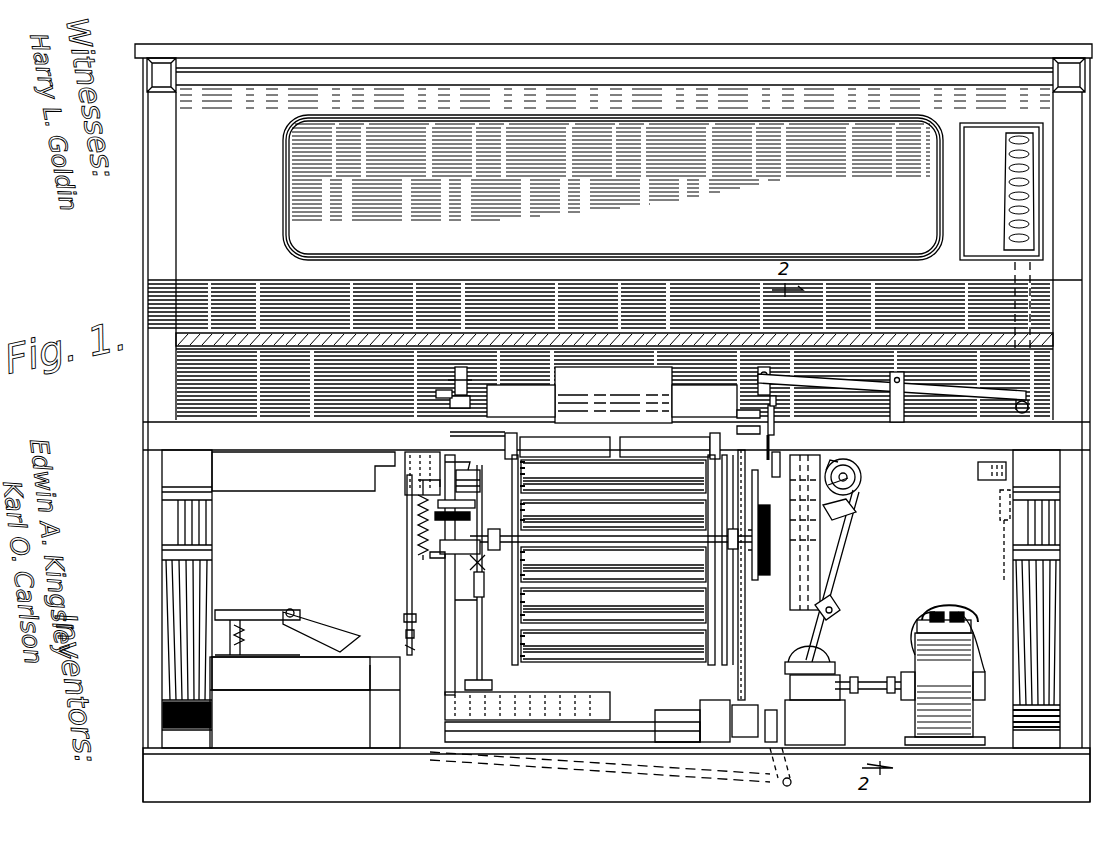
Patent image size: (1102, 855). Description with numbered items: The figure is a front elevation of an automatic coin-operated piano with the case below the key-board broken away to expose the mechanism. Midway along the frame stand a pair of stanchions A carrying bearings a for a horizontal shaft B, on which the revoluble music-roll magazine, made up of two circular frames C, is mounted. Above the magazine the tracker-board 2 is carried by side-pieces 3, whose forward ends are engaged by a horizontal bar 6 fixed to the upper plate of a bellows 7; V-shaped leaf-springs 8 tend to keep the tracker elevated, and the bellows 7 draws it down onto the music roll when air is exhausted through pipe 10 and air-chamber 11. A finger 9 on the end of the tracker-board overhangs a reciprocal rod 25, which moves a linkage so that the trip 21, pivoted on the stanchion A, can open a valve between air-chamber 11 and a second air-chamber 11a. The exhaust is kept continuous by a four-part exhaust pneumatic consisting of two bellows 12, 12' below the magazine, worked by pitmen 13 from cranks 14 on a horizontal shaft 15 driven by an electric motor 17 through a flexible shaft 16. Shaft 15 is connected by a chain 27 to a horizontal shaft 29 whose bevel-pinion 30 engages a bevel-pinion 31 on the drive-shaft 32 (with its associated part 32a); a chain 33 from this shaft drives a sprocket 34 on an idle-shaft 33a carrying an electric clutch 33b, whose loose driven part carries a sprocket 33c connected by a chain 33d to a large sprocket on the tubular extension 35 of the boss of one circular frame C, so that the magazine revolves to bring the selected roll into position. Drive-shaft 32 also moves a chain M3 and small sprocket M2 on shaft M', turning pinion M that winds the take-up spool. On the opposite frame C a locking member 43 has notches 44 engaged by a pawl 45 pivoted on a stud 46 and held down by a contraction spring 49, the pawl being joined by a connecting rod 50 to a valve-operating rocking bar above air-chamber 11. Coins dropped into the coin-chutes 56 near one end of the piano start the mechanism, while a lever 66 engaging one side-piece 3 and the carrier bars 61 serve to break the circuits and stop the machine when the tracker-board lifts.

The tracker-board 2 is at (512, 389).
The side-pieces 3 is at (428, 768).
The horizontal bar 6 is at (570, 356).
The bellows 7 is at (613, 395).
The V-shaped leaf-springs 8 is at (720, 389).
The finger 9 is at (456, 372).
The pipe 10 is at (610, 440).
The air-chamber 11 is at (555, 692).
The air-chamber 11a is at (291, 673).
The exhaust pneumatic 12 is at (572, 706).
The slide line 12' is at (600, 774).
The pitmen 13 is at (828, 690).
The cranks 14 is at (845, 680).
The horizontal shaft 15 is at (830, 645).
The flexible shaft 16 is at (875, 684).
The electric-motor 17 is at (930, 598).
The trip 21 is at (404, 618).
The reciprocal rod 25 is at (438, 396).
The chain 27 is at (830, 620).
The horizontal shaft 29 is at (860, 487).
The bevel-pinion 30 is at (862, 477).
The bevel-pinion 31 is at (830, 462).
The drive-shaft 32 is at (782, 455).
The ratchet bar 32a is at (742, 525).
The chain 33 is at (812, 600).
The idle-shaft 33a is at (770, 748).
The electric clutch 33b is at (705, 703).
The sprocket 33c is at (740, 742).
The chain 33d is at (730, 705).
The sprocket 34 is at (784, 776).
The tubular extension 35 is at (730, 537).
The locking member 43 is at (471, 514).
The notches 44 is at (474, 558).
The pawl 45 is at (476, 479).
The stud 46 is at (425, 492).
The contraction spring 49 is at (430, 540).
The connecting rod 50 is at (407, 583).
The coin-chutes 56 is at (1010, 183).
The carrier bars 61 is at (985, 345).
The lever 66 is at (928, 386).
The stanchions A is at (420, 655).
The horizontal shaft B is at (476, 577).
The circular frames C is at (730, 582).
The pinion M is at (754, 423).
The shaft M' is at (789, 394).
The small sprocket M2 is at (778, 412).
The chain M3 is at (753, 447).
The bearings a is at (620, 575).